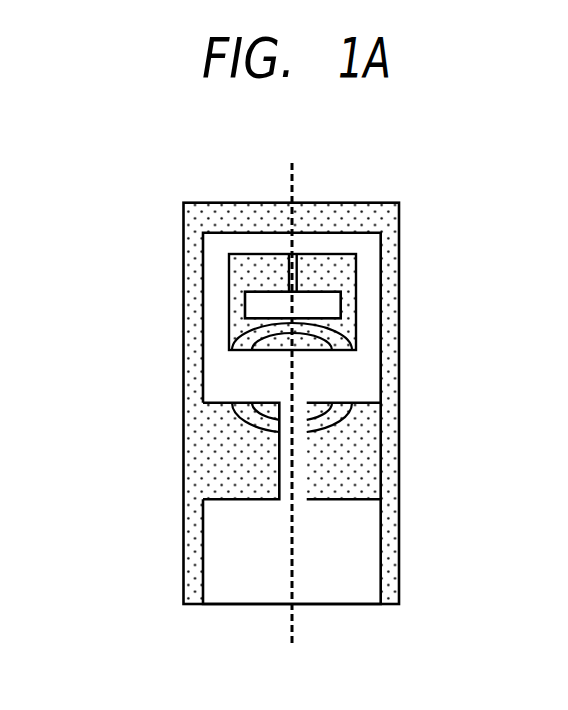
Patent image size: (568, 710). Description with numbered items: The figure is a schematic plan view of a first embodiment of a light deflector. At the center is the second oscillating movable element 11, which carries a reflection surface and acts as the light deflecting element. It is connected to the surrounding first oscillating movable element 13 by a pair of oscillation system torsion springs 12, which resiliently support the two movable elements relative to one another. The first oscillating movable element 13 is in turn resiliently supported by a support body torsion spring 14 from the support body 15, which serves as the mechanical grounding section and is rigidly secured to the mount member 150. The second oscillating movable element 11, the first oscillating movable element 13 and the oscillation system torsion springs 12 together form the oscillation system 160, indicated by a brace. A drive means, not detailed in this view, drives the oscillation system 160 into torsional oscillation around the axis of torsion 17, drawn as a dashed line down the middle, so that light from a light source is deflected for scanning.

The second oscillating movable element 11 is at (295, 308).
The oscillation system torsion springs 12 is at (288, 266).
The first oscillating movable element 13 is at (228, 375).
The support body torsion spring 14 is at (276, 458).
The support body 15 is at (285, 561).
The axis of torsion 17 is at (296, 388).
The mount member 150 is at (350, 465).
The oscillation system 160 is at (191, 329).